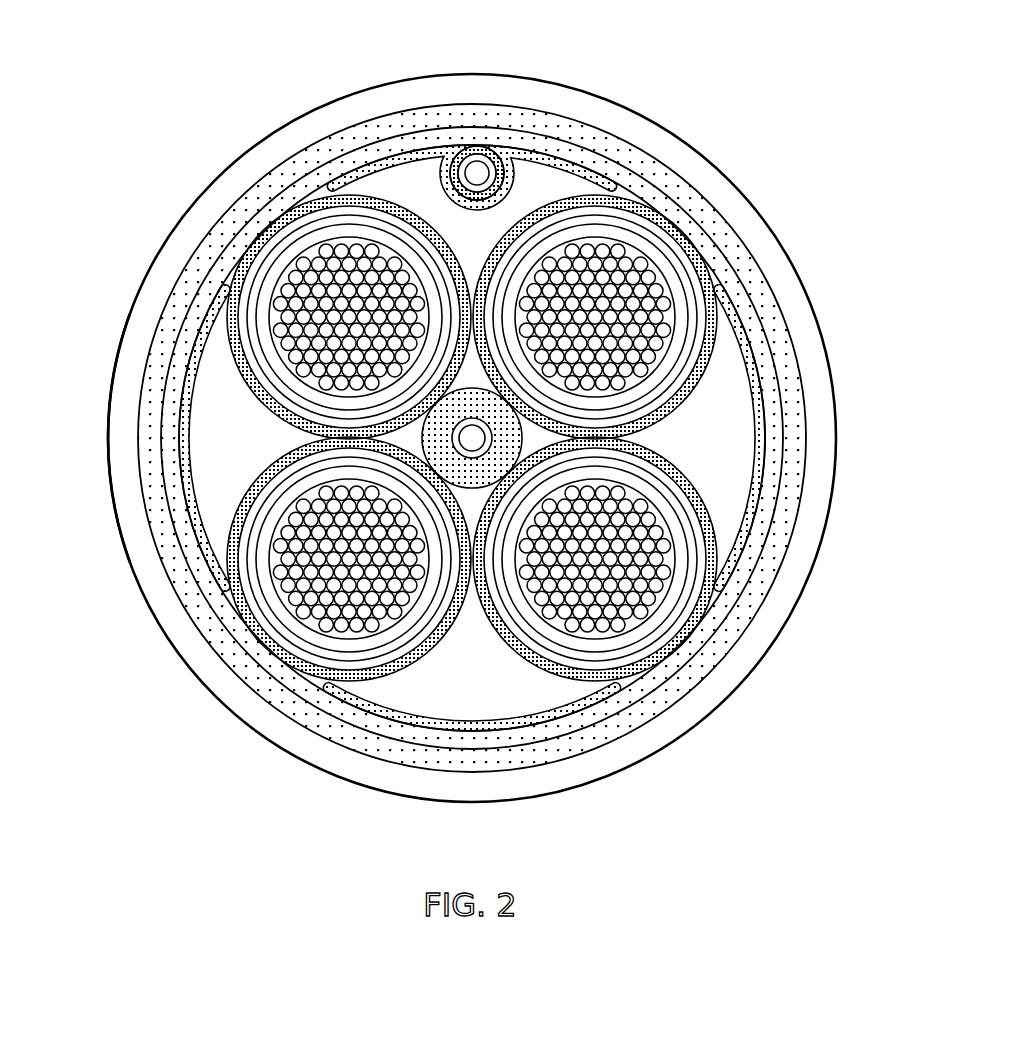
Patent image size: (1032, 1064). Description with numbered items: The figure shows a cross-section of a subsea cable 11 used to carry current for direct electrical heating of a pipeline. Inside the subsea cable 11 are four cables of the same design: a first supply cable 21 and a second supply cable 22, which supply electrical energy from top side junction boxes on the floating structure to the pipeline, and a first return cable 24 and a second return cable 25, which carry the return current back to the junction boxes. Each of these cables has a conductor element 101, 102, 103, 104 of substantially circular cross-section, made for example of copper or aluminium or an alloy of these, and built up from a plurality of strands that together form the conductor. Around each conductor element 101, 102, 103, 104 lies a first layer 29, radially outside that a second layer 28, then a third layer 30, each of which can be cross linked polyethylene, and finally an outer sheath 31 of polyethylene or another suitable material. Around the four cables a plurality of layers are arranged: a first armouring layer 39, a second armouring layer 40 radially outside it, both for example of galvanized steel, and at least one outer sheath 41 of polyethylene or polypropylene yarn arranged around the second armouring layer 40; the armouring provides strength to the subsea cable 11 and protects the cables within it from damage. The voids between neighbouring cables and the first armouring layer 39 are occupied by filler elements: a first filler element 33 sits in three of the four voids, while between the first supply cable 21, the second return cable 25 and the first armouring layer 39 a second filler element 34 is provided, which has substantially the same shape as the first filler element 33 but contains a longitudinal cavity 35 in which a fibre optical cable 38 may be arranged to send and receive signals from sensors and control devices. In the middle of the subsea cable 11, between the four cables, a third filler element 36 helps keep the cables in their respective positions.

The subsea cable 11 is at (473, 440).
The first supply cable 21 is at (728, 295).
The second supply cable 22 is at (730, 584).
The first return cable 24 is at (320, 688).
The second return cable 25 is at (219, 286).
The second layer 28 is at (280, 630).
The first layer 29 is at (268, 645).
The third layer 30 is at (275, 610).
The outer sheath 31 is at (225, 581).
The first filler element 33 is at (213, 456).
The second filler element 34 is at (542, 172).
The cavity 35 is at (440, 185).
The third filler element 36 is at (527, 440).
The fibre optical cable 38 is at (478, 172).
The first armouring layer 39 is at (790, 332).
The second armouring layer 40 is at (804, 366).
The outer sheath 41 is at (113, 368).
The conductor element 101 is at (642, 247).
The conductor element 102 is at (650, 607).
The conductor element 103 is at (283, 647).
The conductor element 104 is at (340, 277).